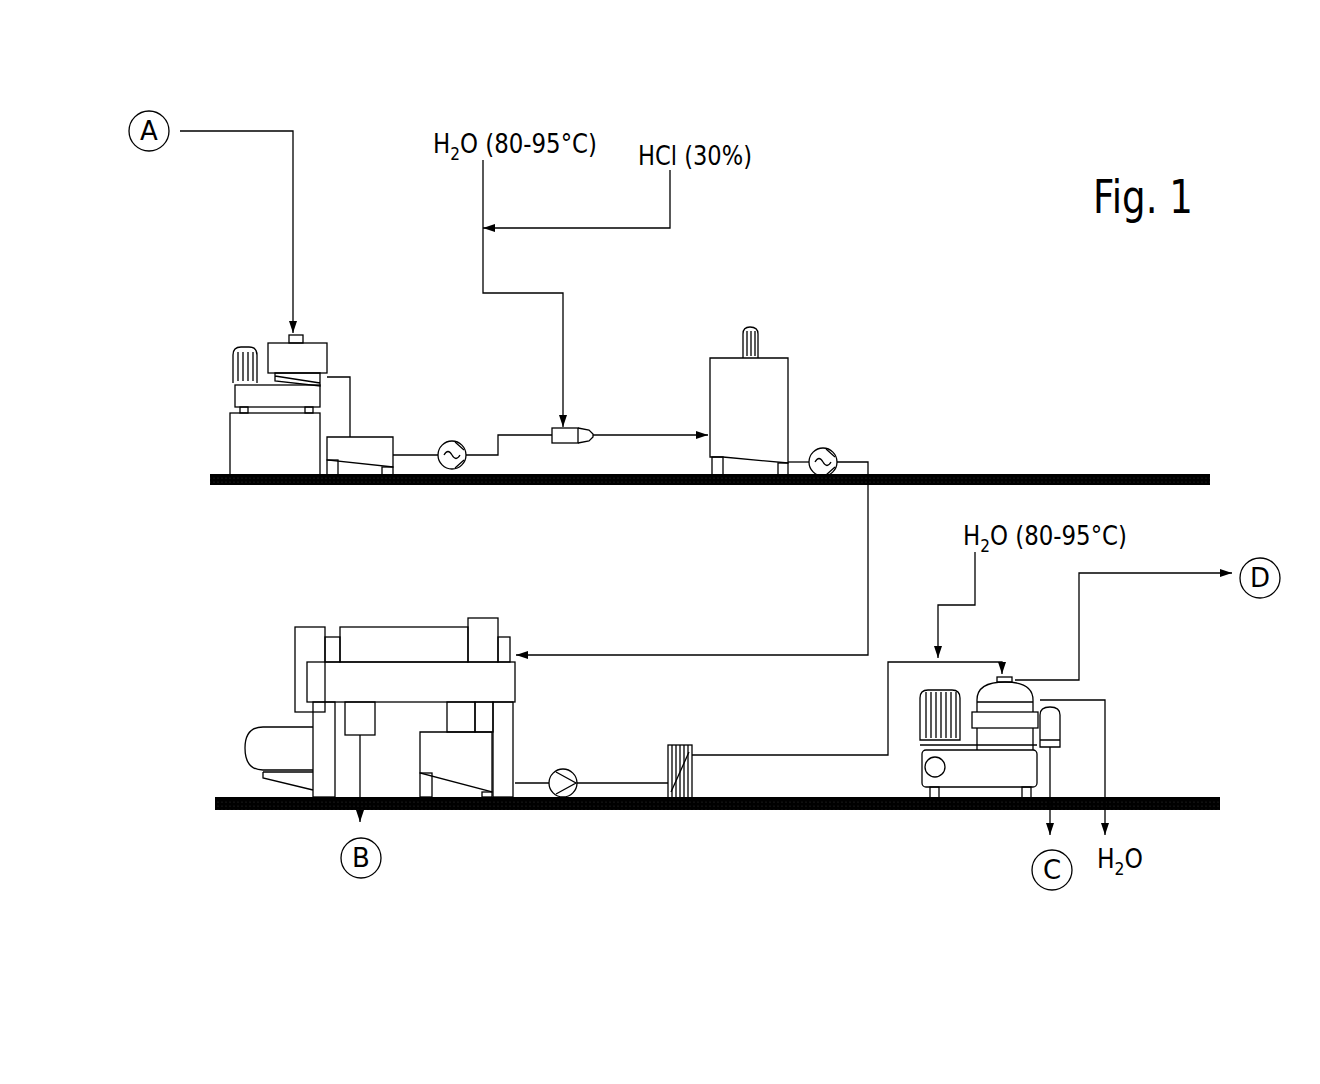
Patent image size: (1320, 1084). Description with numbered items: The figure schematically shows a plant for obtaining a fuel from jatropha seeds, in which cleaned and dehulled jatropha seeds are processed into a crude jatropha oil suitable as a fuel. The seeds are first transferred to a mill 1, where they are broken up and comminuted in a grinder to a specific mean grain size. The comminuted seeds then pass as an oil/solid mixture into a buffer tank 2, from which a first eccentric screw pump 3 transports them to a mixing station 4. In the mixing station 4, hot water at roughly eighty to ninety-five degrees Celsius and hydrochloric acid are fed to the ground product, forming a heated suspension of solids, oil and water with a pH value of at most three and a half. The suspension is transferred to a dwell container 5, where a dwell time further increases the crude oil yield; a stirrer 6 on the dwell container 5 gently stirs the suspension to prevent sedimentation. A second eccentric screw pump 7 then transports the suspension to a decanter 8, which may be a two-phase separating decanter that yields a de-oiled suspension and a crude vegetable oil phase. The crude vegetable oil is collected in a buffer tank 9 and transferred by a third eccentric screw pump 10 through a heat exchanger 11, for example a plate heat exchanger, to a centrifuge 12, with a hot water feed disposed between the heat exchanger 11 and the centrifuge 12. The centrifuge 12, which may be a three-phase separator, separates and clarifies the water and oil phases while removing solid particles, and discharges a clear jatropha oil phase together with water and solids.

The mill 1 is at (322, 358).
The buffer tank 2 is at (363, 450).
The first eccentric screw pump 3 is at (440, 447).
The mixing station 4 is at (570, 438).
The dwell container 5 is at (783, 392).
The stirrer 6 is at (758, 342).
The second eccentric screw pump 7 is at (837, 453).
The decanter 8 is at (326, 685).
The buffer tank 9 is at (455, 767).
The third eccentric screw pump 10 is at (557, 769).
The heat exchanger 11 is at (680, 800).
The centrifuge 12 is at (998, 770).